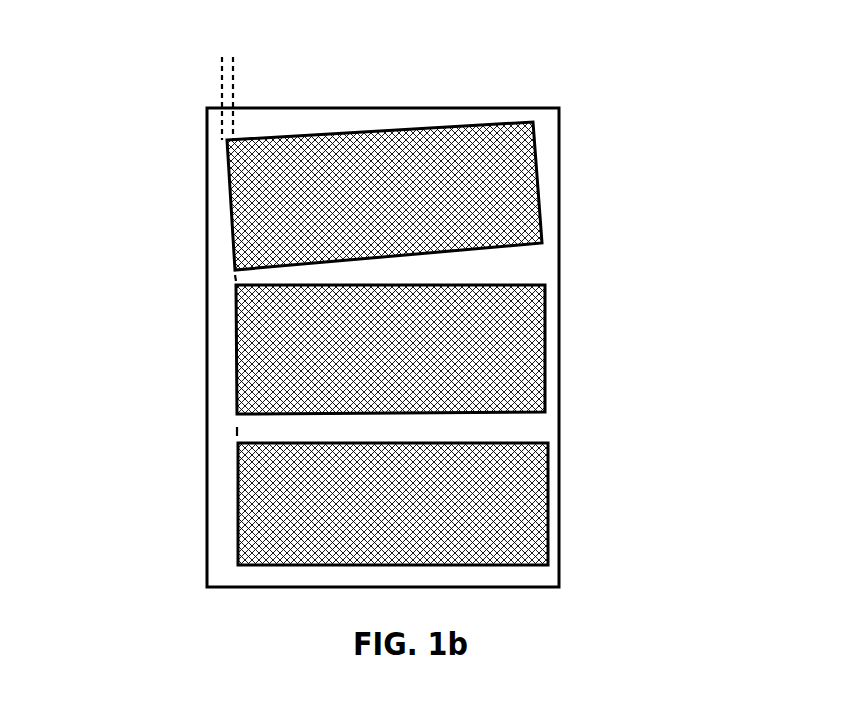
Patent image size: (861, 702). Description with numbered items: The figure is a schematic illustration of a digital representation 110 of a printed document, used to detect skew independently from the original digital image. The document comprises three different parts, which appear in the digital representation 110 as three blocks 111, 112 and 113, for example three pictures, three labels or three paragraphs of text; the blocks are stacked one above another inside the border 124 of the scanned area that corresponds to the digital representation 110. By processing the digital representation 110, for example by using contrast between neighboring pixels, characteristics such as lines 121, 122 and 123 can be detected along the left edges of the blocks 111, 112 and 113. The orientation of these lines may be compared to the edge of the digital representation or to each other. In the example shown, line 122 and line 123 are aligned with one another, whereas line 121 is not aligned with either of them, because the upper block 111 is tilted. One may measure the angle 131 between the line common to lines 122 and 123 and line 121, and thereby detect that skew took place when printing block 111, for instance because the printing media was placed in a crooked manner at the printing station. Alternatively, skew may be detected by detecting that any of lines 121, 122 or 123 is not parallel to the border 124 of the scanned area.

The digital representation 110 is at (658, 77).
The block 111 is at (540, 205).
The block 112 is at (545, 310).
The block 113 is at (548, 463).
The line 121 is at (227, 160).
The line 122 is at (237, 347).
The line 123 is at (240, 480).
The border 124 is at (207, 263).
The angle 131 is at (220, 66).